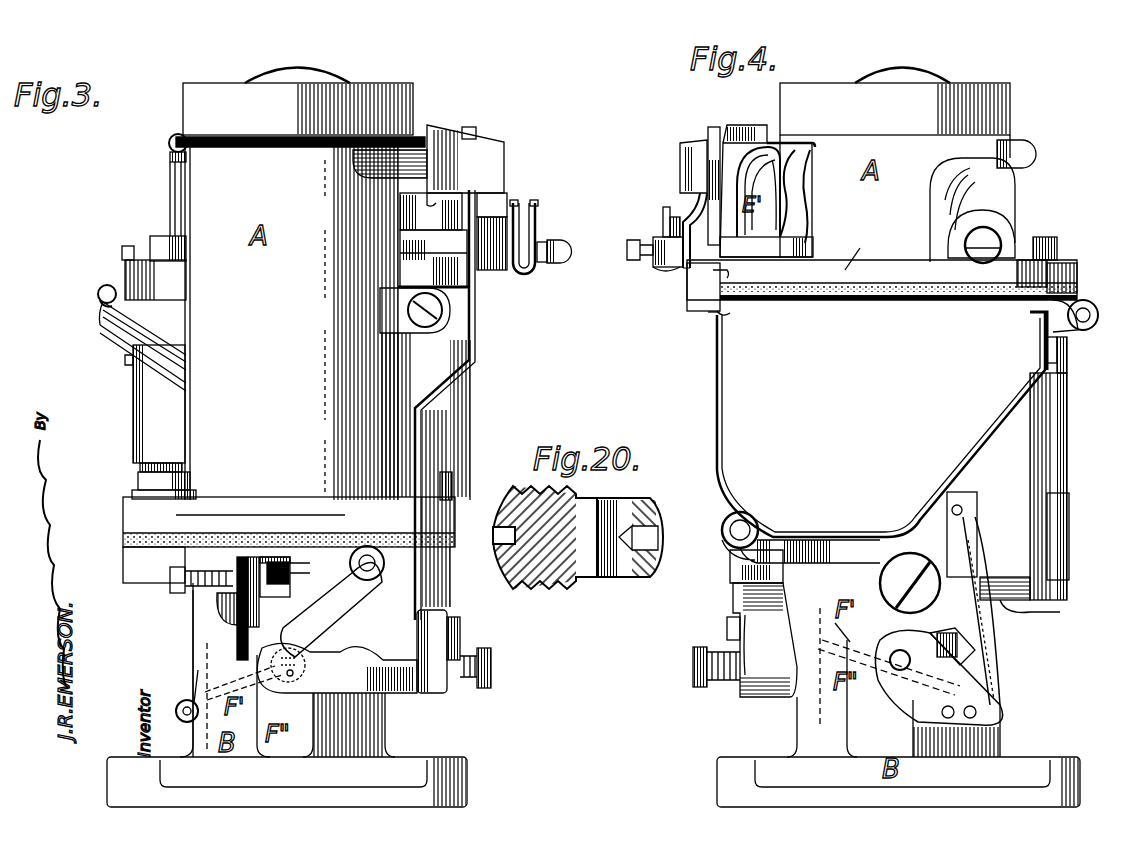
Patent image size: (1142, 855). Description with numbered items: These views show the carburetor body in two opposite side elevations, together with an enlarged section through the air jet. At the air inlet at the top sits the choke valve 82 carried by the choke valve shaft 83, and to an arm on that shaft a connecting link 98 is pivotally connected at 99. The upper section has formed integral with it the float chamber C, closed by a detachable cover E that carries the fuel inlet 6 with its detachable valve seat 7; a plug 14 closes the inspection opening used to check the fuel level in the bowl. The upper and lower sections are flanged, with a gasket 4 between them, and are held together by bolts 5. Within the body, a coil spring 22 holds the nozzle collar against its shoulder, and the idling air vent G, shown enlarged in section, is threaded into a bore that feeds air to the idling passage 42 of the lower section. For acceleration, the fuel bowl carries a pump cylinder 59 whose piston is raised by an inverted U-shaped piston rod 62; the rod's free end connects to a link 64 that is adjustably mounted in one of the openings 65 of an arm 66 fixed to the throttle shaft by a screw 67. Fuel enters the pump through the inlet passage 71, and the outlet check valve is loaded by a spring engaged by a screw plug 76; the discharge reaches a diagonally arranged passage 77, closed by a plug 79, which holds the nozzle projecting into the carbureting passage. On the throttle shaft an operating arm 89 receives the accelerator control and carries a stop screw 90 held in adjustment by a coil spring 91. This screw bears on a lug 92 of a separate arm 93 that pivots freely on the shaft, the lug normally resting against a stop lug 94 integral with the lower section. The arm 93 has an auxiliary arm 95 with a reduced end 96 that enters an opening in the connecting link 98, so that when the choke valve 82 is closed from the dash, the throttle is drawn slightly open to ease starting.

In FIG. 3, the choke valve 82 is at (297, 78).
In FIG. 4, the choke valve 82 is at (920, 78).
In FIG. 3, the choke valve shaft 83 is at (168, 155).
In FIG. 4, the choke valve shaft 83 is at (1036, 158).
In FIG. 3, the pivotal connection 99 is at (462, 130).
In FIG. 4, the pivotal connection 99 is at (738, 130).
In FIG. 3, the connecting link 98 is at (478, 327).
In FIG. 4, the connecting link 98 is at (703, 188).
In FIG. 3, the screw plug 76 is at (165, 240).
In FIG. 4, the screw plug 76 is at (1052, 260).
In FIG. 3, the plug 79 is at (100, 296).
In FIG. 4, the plug 79 is at (1096, 310).
In FIG. 3, the diagonally arranged passage 77 is at (105, 330).
In FIG. 3, the pump cylinder 59 is at (140, 462).
In FIG. 4, the pump cylinder 59 is at (1030, 486).
In FIG. 3, the bolts 5 is at (182, 478).
In FIG. 3, the gasket 4 is at (197, 535).
In FIG. 4, the gasket 4 is at (1070, 536).
In FIG. 3, the stop screw 90 is at (172, 572).
In FIG. 3, the coil spring 91 is at (194, 586).
In FIG. 3, the arm 93 is at (240, 600).
In FIG. 3, the lug 92 is at (270, 553).
In FIG. 3, the stop lug 94 is at (278, 558).
In FIG. 3, the operating arm 89 is at (332, 601).
In FIG. 3, the auxiliary arm 95 is at (382, 692).
In FIG. 3, the reduced portion 96 is at (445, 685).
In FIG. 3, the idling passage 42 is at (430, 598).
In FIG. 4, the idling passage 42 is at (740, 596).
In FIG. 3, the link 64 is at (192, 703).
In FIG. 4, the link 64 is at (1003, 668).
In FIG. 3, the arm 66 is at (178, 706).
In FIG. 4, the arm 66 is at (905, 690).
In FIG. 4, the fuel inlet 6 is at (988, 220).
In FIG. 4, the valve seat 7 is at (990, 248).
In FIG. 4, the plug 14 is at (1068, 352).
In FIG. 4, the piston rod 62 is at (965, 498).
In FIG. 4, the coil spring 22 is at (880, 582).
In FIG. 4, the screw 67 is at (955, 645).
In FIG. 4, the openings 65 is at (975, 715).
In FIG. 4, the passage 71 is at (1038, 597).
In FIG. 3, the idling air vent G is at (445, 306).
In FIG. 20, the idling air vent G is at (578, 556).
In FIG. 4, the cover E is at (882, 266).
In FIG. 4, the float chamber C is at (876, 424).